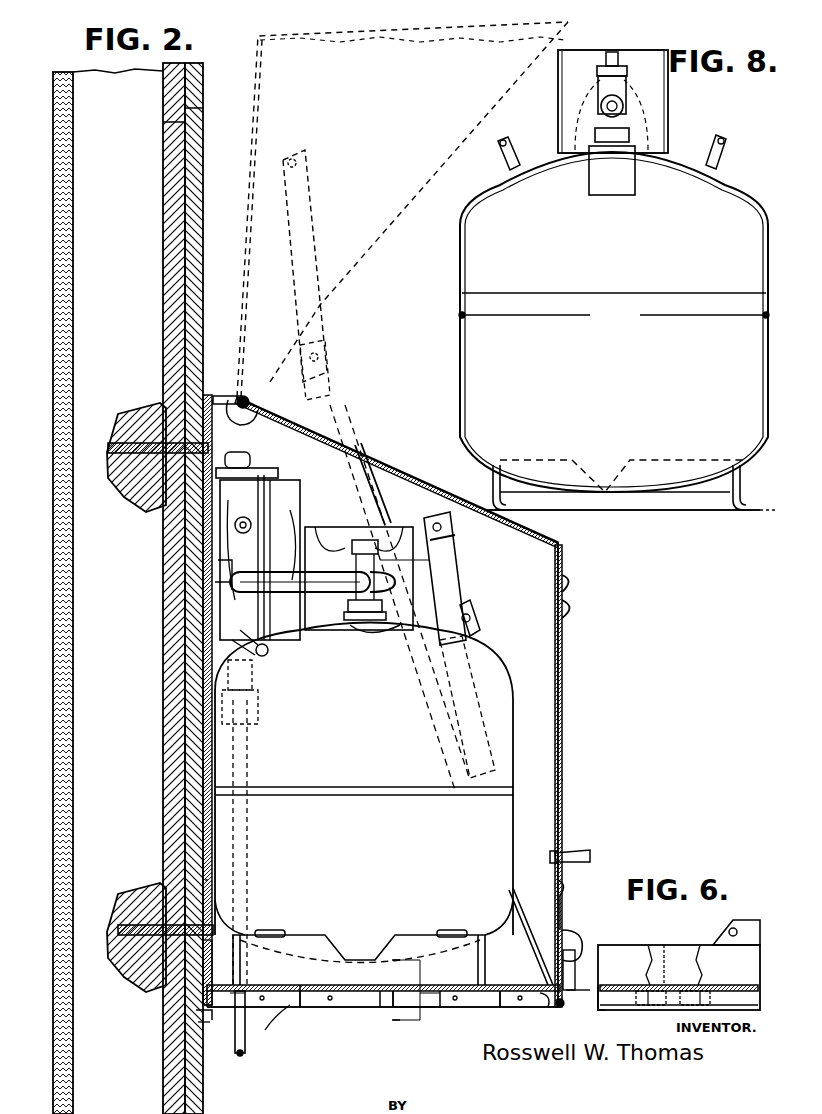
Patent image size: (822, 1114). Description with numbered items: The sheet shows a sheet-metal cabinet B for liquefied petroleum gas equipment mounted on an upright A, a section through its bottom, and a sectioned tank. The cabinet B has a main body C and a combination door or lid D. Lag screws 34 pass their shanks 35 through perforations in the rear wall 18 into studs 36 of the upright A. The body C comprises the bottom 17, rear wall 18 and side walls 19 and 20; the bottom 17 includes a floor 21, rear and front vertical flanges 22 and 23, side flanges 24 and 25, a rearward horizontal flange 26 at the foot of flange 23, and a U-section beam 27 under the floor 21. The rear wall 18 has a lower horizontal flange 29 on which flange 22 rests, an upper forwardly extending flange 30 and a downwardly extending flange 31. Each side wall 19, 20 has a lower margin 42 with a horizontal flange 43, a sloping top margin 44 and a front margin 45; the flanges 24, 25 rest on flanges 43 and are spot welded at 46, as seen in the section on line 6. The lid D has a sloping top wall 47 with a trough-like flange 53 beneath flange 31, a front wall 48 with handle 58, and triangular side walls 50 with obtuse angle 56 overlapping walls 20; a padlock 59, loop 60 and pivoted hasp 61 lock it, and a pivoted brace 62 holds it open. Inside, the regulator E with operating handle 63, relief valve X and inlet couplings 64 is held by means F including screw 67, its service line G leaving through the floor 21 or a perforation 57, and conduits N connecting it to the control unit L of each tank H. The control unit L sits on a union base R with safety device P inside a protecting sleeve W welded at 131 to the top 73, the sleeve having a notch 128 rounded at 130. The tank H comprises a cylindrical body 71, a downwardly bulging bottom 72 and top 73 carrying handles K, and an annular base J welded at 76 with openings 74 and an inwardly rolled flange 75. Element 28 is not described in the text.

In FIG. 2, the upright stud 36 is at (60, 370).
In FIG. 2, the upright A is at (180, 180).
In FIG. 2, the shank 35 is at (145, 425).
In FIG. 2, the lag screw 34 is at (118, 447).
In FIG. 2, the cabinet B is at (203, 738).
In FIG. 2, the side wall 20 is at (205, 988).
In FIG. 6, the side wall 20 is at (760, 925).
In FIG. 2, the rear wall 18 is at (205, 830).
In FIG. 2, the horizontal flange 29 is at (196, 1012).
In FIG. 2, the vertical flange 22 is at (200, 1022).
In FIG. 2, the combination door or lid D is at (416, 702).
In FIG. 2, the side wall 50 is at (560, 708).
In FIG. 2, the front wall 48 is at (563, 775).
In FIG. 2, the obtuse angle 56 is at (565, 543).
In FIG. 2, the handle 58 is at (580, 850).
In FIG. 2, the pivoted hasp 61 is at (562, 895).
In FIG. 2, the loop 60 is at (578, 930).
In FIG. 2, the padlock 59 is at (572, 950).
In FIG. 2, the side wall 19 is at (585, 990).
In FIG. 2, the vertical flange 23 is at (563, 1010).
In FIG. 2, the horizontal flange 43 is at (455, 1010).
In FIG. 6, the horizontal flange 43 is at (625, 1010).
In FIG. 2, the bottom 17 is at (275, 1003).
In FIG. 6, the bottom 17 is at (710, 945).
In FIG. 2, the floor 21 is at (315, 983).
In FIG. 2, the channel block 28 is at (470, 972).
In FIG. 2, the beam 27 is at (395, 1008).
In FIG. 6, the beam 27 is at (664, 945).
In FIG. 2, the side flange 25 is at (505, 1007).
In FIG. 6, the side flange 25 is at (735, 995).
In FIG. 2, the horizontal flange 26 is at (540, 1008).
In FIG. 2, the main body C is at (288, 1008).
In FIG. 2, the section line 6 is at (401, 991).
In FIG. 2, the spot weld 46 is at (274, 1030).
In FIG. 2, the service line G is at (236, 1050).
In FIG. 2, the tank or cylinder H is at (513, 828).
In FIG. 8, the tank or cylinder H is at (460, 360).
In FIG. 2, the perforation 57 is at (330, 950).
In FIG. 2, the notches or openings 74 is at (378, 958).
In FIG. 8, the notches or openings 74 is at (605, 486).
In FIG. 2, the welding 76 is at (272, 930).
In FIG. 2, the fluid pressure reducing regulator E is at (220, 518).
In FIG. 2, the operating handle 63 is at (278, 472).
In FIG. 2, the pressure relief valve X is at (268, 500).
In FIG. 2, the inlet coupling 64 is at (218, 572).
In FIG. 2, the securing means F is at (230, 580).
In FIG. 2, the conduit N is at (232, 600).
In FIG. 2, the union or swivel type base R is at (270, 648).
In FIG. 8, the union or swivel type base R is at (611, 159).
In FIG. 2, the safety device P is at (375, 630).
In FIG. 2, the screw 67 is at (248, 745).
In FIG. 2, the rounded portion 130 is at (356, 567).
In FIG. 2, the control unit L is at (369, 561).
In FIG. 8, the control unit L is at (625, 98).
In FIG. 2, the inverted V-shaped notch or hole 128 is at (400, 600).
In FIG. 2, the pivoted brace 62 is at (440, 575).
In FIG. 2, the protecting sleeve W is at (452, 545).
In FIG. 8, the protecting sleeve W is at (558, 100).
In FIG. 2, the handles K is at (478, 628).
In FIG. 8, the handles K is at (498, 155).
In FIG. 2, the top wall 47 is at (370, 458).
In FIG. 2, the front margin 45 is at (385, 480).
In FIG. 2, the forwardly extending flange 30 is at (225, 395).
In FIG. 2, the downwardly extending flange 31 is at (245, 395).
In FIG. 2, the trough-like flange 53 is at (255, 408).
In FIG. 2, the top margin 44 is at (318, 395).
In FIG. 8, the cylindrical body portion 71 is at (591, 322).
In FIG. 8, the concavo-convex bottom 72 is at (530, 475).
In FIG. 8, the inwardly rolled flange 75 is at (640, 512).
In FIG. 8, the base J is at (700, 512).
In FIG. 8, the weld 131 is at (560, 140).
In FIG. 8, the top 73 is at (530, 170).
In FIG. 6, the side flange 24 is at (605, 992).
In FIG. 6, the horizontal lower margin 42 is at (602, 1010).